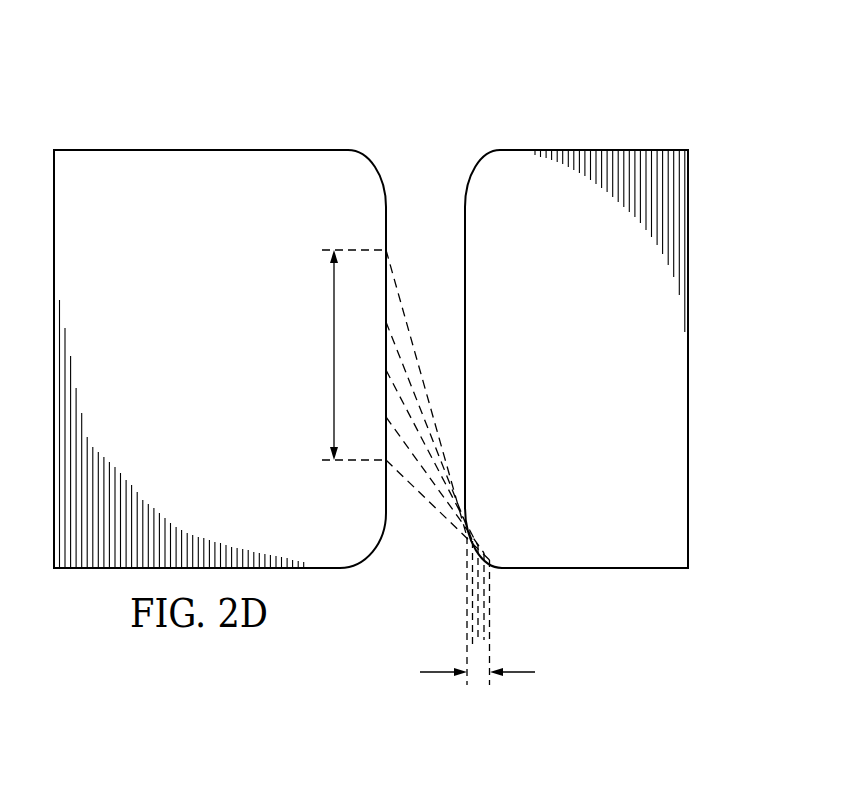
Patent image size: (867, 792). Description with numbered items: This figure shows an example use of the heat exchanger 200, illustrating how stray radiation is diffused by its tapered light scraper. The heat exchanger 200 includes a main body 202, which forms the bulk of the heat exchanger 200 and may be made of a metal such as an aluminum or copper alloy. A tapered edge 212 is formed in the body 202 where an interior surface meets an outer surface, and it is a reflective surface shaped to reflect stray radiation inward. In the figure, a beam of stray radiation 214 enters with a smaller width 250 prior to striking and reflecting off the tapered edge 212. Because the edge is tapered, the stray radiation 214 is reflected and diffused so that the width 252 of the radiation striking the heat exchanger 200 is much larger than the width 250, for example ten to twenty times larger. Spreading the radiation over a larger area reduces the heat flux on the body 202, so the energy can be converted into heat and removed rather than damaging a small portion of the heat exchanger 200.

The heat exchanger 200 is at (530, 96).
The main body 202 is at (200, 149).
The tapered edge 212 is at (473, 542).
The stray radiation 214 is at (524, 615).
The width 250 is at (517, 673).
The width 252 is at (334, 360).